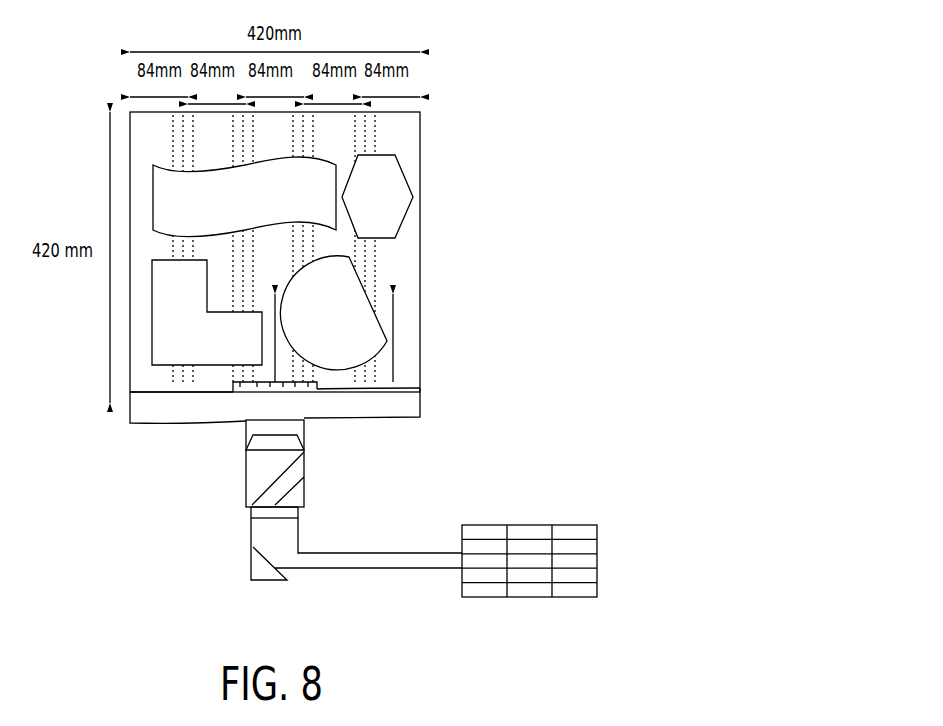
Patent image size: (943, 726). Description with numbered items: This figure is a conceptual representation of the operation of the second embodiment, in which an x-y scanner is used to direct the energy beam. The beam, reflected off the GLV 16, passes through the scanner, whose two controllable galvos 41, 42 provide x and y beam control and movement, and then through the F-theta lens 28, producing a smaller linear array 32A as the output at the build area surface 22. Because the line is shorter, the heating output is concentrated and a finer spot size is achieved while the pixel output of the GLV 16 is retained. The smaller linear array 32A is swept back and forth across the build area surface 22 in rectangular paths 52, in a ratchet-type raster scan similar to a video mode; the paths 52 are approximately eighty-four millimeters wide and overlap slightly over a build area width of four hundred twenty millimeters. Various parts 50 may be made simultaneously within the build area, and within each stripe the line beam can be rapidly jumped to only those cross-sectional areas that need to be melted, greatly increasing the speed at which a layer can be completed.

The GLV 16 is at (528, 578).
The build area surface 22 is at (413, 267).
The F-theta lens 28 is at (413, 398).
The smaller linear array 32A is at (315, 383).
The galvo 41 is at (317, 500).
The galvo 42 is at (255, 465).
The parts 50 is at (160, 311).
The rectangular paths 52 is at (158, 140).